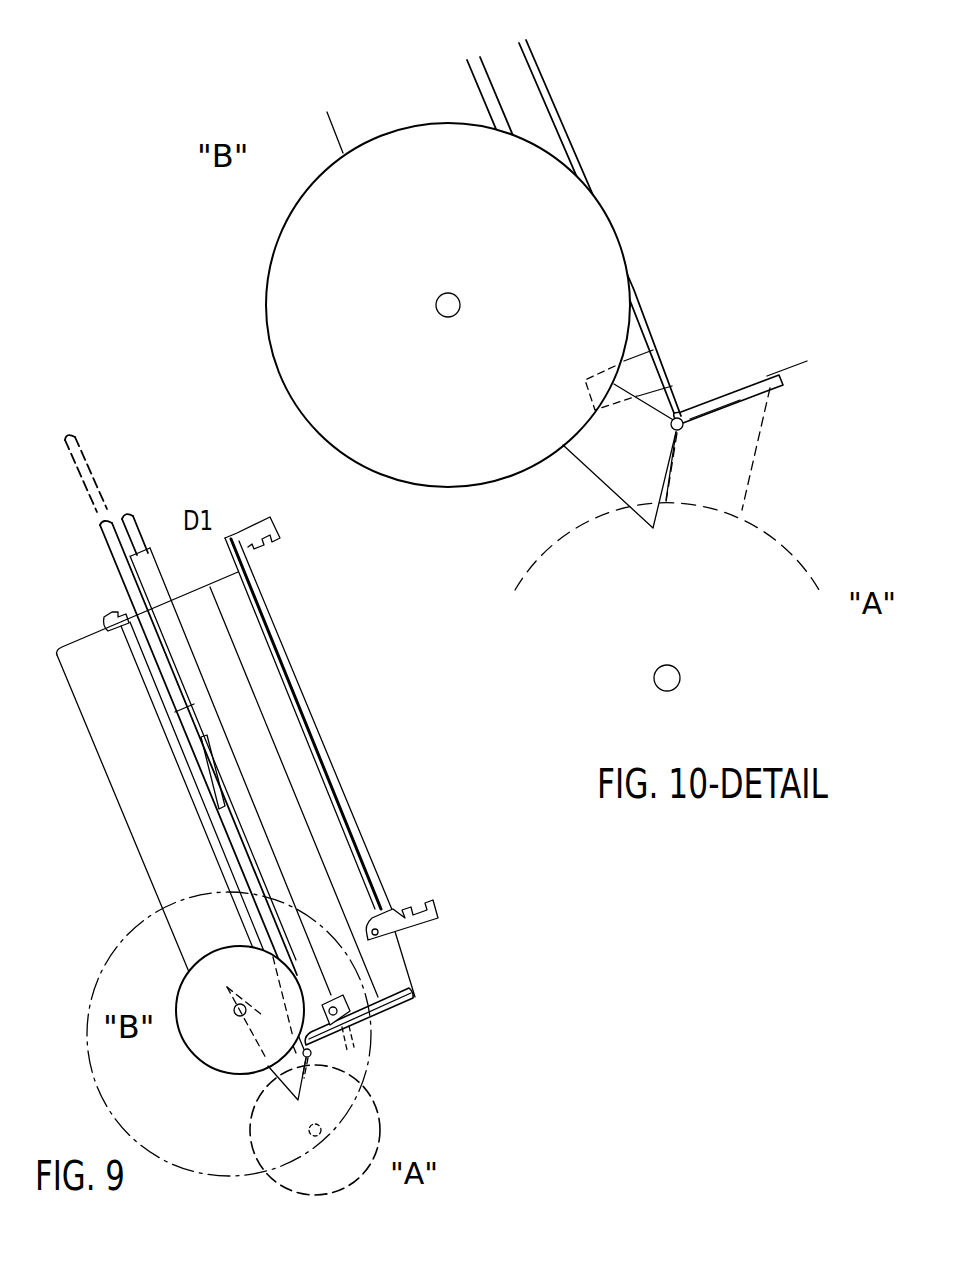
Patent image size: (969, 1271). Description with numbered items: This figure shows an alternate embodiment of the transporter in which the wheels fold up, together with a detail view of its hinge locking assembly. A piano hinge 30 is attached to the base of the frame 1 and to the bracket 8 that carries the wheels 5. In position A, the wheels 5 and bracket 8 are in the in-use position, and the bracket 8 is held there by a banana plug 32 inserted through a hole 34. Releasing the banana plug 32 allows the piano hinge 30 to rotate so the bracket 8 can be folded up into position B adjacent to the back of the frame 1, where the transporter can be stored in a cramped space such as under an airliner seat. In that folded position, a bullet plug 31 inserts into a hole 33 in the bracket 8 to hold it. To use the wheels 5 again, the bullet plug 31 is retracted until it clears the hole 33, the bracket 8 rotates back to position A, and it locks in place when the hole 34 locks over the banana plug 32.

In FIG. 10, the frame 1 is at (542, 91).
In FIG. 9, the frame 1 is at (140, 640).
In FIG. 10, the wheels 5 is at (270, 365).
In FIG. 9, the wheels 5 is at (180, 990).
In FIG. 10, the bracket 8 is at (590, 474).
In FIG. 9, the bracket 8 is at (280, 1075).
In FIG. 10, the piano hinge 30 is at (681, 404).
In FIG. 9, the piano hinge 30 is at (318, 998).
In FIG. 10, the bullet plug 31 is at (597, 387).
In FIG. 9, the bullet plug 31 is at (273, 1030).
In FIG. 10, the banana plug 32 is at (773, 391).
In FIG. 9, the banana plug 32 is at (347, 1028).
In FIG. 10, the hole 33 is at (683, 503).
In FIG. 9, the hole 33 is at (313, 1066).
In FIG. 10, the hole 34 is at (769, 378).